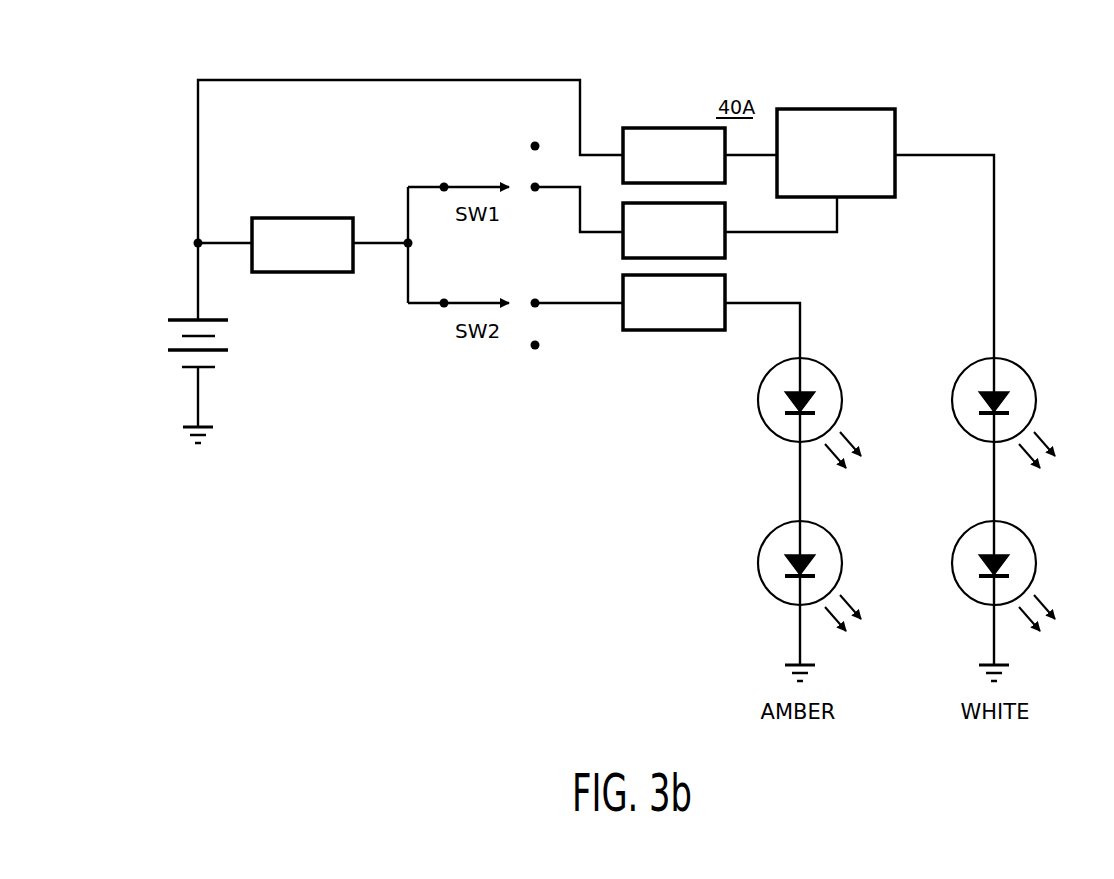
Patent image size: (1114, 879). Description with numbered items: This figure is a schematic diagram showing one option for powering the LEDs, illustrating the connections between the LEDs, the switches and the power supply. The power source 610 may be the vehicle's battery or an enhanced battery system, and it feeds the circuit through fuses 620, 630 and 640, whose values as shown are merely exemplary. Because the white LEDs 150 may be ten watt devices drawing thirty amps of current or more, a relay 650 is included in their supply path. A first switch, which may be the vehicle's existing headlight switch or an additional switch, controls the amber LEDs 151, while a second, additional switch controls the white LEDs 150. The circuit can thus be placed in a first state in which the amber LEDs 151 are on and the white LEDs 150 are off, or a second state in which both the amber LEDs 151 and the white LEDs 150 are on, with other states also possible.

The power source 610 is at (165, 298).
The fuse 620 is at (297, 218).
The fuse 630 is at (668, 128).
The fuse 640 is at (668, 330).
The relay 650 is at (898, 130).
The amber LEDs 151 is at (831, 362).
The white LEDs 150 is at (1023, 363).